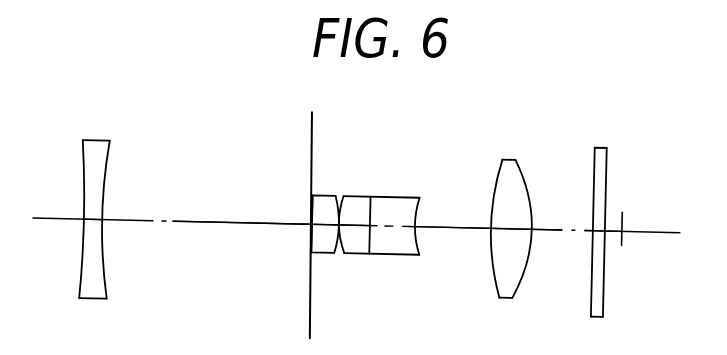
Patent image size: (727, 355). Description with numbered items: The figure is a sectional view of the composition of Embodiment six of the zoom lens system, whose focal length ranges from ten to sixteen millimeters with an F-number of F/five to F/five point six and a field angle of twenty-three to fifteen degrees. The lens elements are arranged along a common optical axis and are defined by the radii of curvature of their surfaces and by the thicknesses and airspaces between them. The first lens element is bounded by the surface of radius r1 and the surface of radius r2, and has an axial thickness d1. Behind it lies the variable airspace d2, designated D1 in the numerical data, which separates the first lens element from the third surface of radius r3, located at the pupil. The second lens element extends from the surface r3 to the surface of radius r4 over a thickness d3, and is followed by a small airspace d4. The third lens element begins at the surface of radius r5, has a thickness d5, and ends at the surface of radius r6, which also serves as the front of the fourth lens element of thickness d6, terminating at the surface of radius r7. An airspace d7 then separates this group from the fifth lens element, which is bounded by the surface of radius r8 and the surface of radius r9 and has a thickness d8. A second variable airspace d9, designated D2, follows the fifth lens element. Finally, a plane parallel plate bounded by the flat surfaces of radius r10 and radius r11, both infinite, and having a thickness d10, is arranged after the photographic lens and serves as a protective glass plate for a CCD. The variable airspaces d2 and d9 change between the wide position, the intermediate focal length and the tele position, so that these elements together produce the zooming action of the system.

The radius of curvature of first lens surface r1 is at (81, 166).
The radius of curvature of second lens surface r2 is at (105, 175).
The radius of curvature of third lens surface (pupil) r3 is at (316, 192).
The radius of curvature of fourth lens surface r4 is at (334, 191).
The radius of curvature of fifth lens surface r5 is at (353, 191).
The radius of curvature of sixth lens surface r6 is at (371, 201).
The radius of curvature of seventh lens surface r7 is at (417, 196).
The radius of curvature of eighth lens surface r8 is at (495, 182).
The radius of curvature of ninth lens surface r9 is at (525, 166).
The radius of curvature of tenth surface r10 is at (593, 168).
The radius of curvature of eleventh surface r11 is at (605, 169).
The thickness of first lens element d1 is at (92, 219).
The variable airspace D1 d2 is at (202, 219).
The thickness of second lens element d3 is at (311, 224).
The airspace between second and third lens elements d4 is at (339, 221).
The thickness of third lens element d5 is at (358, 221).
The thickness of fourth lens element d6 is at (401, 221).
The airspace between fourth and fifth lens elements d7 is at (450, 221).
The thickness of fifth lens element d8 is at (505, 220).
The variable airspace D2 d9 is at (553, 220).
The thickness of plane parallel plate d10 is at (597, 220).